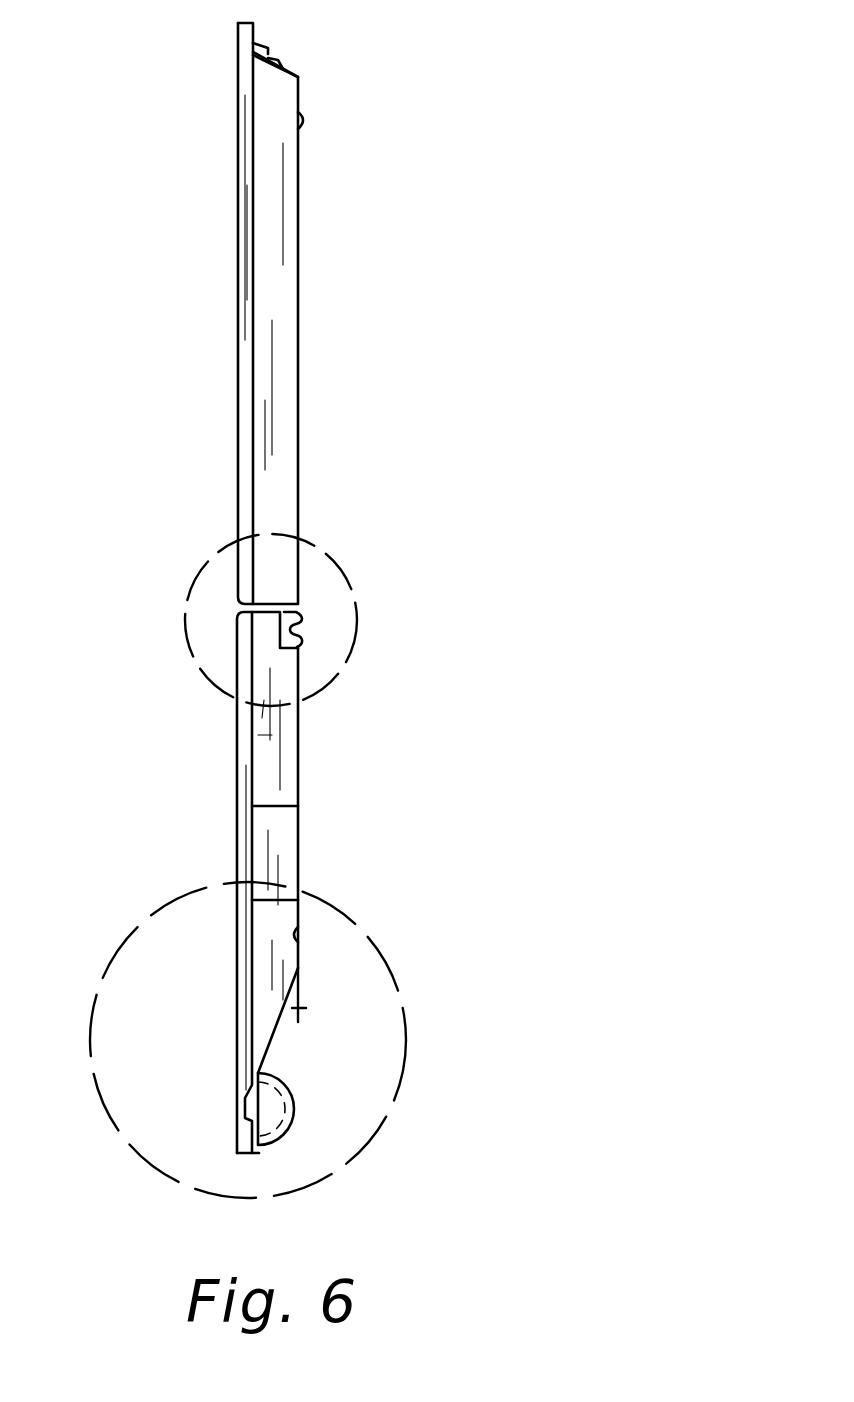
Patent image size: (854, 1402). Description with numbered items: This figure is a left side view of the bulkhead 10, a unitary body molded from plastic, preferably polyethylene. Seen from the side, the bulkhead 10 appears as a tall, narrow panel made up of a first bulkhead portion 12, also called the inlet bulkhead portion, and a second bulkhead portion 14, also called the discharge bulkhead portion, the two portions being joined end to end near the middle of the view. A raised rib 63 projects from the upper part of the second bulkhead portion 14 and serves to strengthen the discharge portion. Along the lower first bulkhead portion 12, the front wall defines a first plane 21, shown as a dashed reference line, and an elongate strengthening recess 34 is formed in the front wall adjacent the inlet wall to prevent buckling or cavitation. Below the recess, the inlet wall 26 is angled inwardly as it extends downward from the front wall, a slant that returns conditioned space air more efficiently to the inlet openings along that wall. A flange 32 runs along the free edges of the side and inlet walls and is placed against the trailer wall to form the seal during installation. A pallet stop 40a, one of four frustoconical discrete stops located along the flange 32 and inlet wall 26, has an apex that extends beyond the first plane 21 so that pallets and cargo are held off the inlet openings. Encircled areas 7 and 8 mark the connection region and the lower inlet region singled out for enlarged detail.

The bulkhead 10 is at (110, 373).
The second bulkhead portion 14 is at (300, 341).
The first bulkhead portion 12 is at (314, 821).
The raised rib 63 is at (306, 122).
The detail region (FIG. 7) 7 is at (343, 576).
The detail region (FIG. 8) 8 is at (150, 912).
The elongate strengthening recess 34 is at (299, 937).
The flange 32 is at (243, 988).
The first plane 21 is at (302, 1007).
The inlet wall 26 is at (278, 1037).
The pallet stop 40a is at (277, 1138).